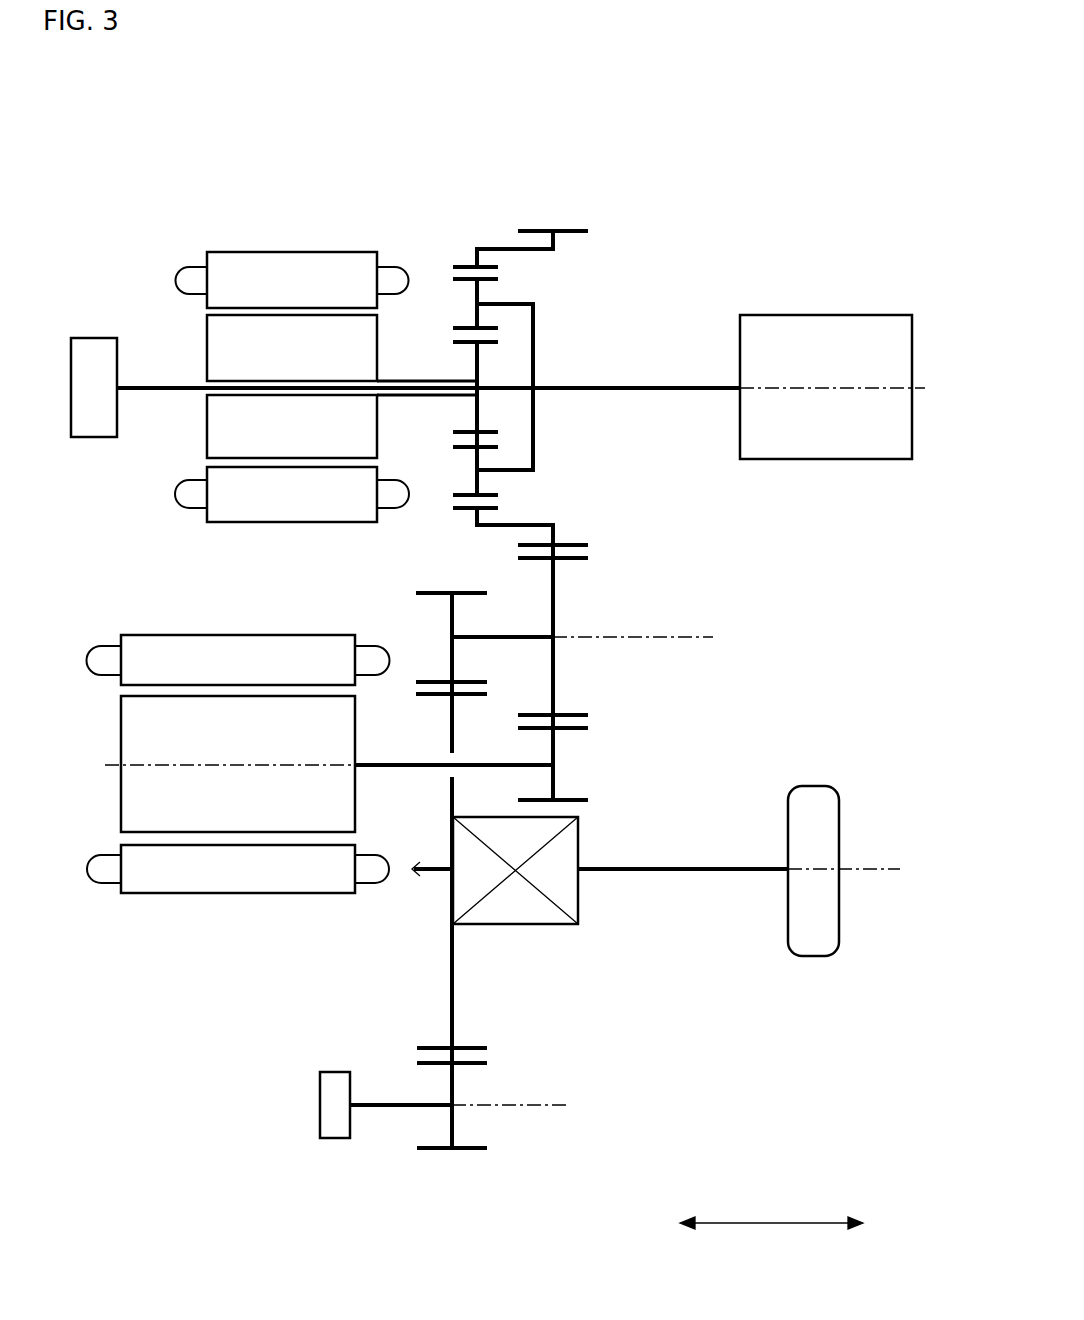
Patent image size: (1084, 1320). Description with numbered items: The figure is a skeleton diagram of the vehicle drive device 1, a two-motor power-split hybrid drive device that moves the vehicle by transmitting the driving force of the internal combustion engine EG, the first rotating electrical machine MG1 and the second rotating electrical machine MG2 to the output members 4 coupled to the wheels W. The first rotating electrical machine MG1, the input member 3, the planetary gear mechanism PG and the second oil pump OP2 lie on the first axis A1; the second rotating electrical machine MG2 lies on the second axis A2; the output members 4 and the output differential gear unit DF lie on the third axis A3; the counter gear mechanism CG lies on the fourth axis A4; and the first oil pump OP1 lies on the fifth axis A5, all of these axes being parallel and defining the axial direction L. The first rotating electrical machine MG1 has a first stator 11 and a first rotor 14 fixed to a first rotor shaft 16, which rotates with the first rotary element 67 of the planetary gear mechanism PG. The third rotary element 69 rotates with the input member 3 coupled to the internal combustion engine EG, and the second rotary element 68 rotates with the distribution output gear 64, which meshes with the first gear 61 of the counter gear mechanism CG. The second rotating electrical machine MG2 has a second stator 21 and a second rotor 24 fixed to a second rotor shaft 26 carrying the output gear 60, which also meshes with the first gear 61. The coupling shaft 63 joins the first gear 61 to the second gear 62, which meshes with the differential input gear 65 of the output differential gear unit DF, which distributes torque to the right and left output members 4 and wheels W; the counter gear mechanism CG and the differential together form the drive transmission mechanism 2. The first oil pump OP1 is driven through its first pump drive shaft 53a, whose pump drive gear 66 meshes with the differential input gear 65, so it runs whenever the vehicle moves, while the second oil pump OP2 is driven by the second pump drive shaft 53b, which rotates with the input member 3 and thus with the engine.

The vehicle drive device 1 is at (112, 166).
The drive transmission mechanism 2 is at (713, 729).
The input member 3 is at (662, 386).
The output members 4 is at (433, 875).
The first stator 11 is at (237, 523).
The first rotor 14 is at (207, 427).
The first rotor shaft 16 is at (415, 397).
The second stator 21 is at (157, 635).
The second rotor 24 is at (125, 742).
The second rotor shaft 26 is at (396, 769).
The first pump drive shaft 53a is at (370, 1108).
The second pump drive shaft 53b is at (166, 385).
The output gear 60 is at (578, 800).
The first gear 61 is at (568, 715).
The second gear 62 is at (428, 593).
The coupling shaft 63 is at (512, 637).
The distribution output gear 64 is at (570, 545).
The differential input gear 65 is at (467, 1045).
The pump drive gear 66 is at (467, 1150).
The first rotary element 67 is at (460, 342).
The second rotary element 68 is at (462, 510).
The third rotary element 69 is at (535, 350).
The first rotating electrical machine MG1 is at (218, 232).
The second rotating electrical machine MG2 is at (185, 908).
The planetary gear mechanism PG is at (432, 270).
The internal combustion engine EG is at (818, 315).
The counter gear mechanism CG is at (600, 605).
The output differential gear unit DF is at (540, 925).
The wheels W is at (812, 956).
The first oil pump OP1 is at (325, 1125).
The second oil pump OP2 is at (90, 338).
The first axis A1 is at (852, 389).
The second axis A2 is at (208, 766).
The third axis A3 is at (864, 869).
The fourth axis A4 is at (604, 641).
The fifth axis A5 is at (530, 1104).
The axial direction L is at (772, 1216).